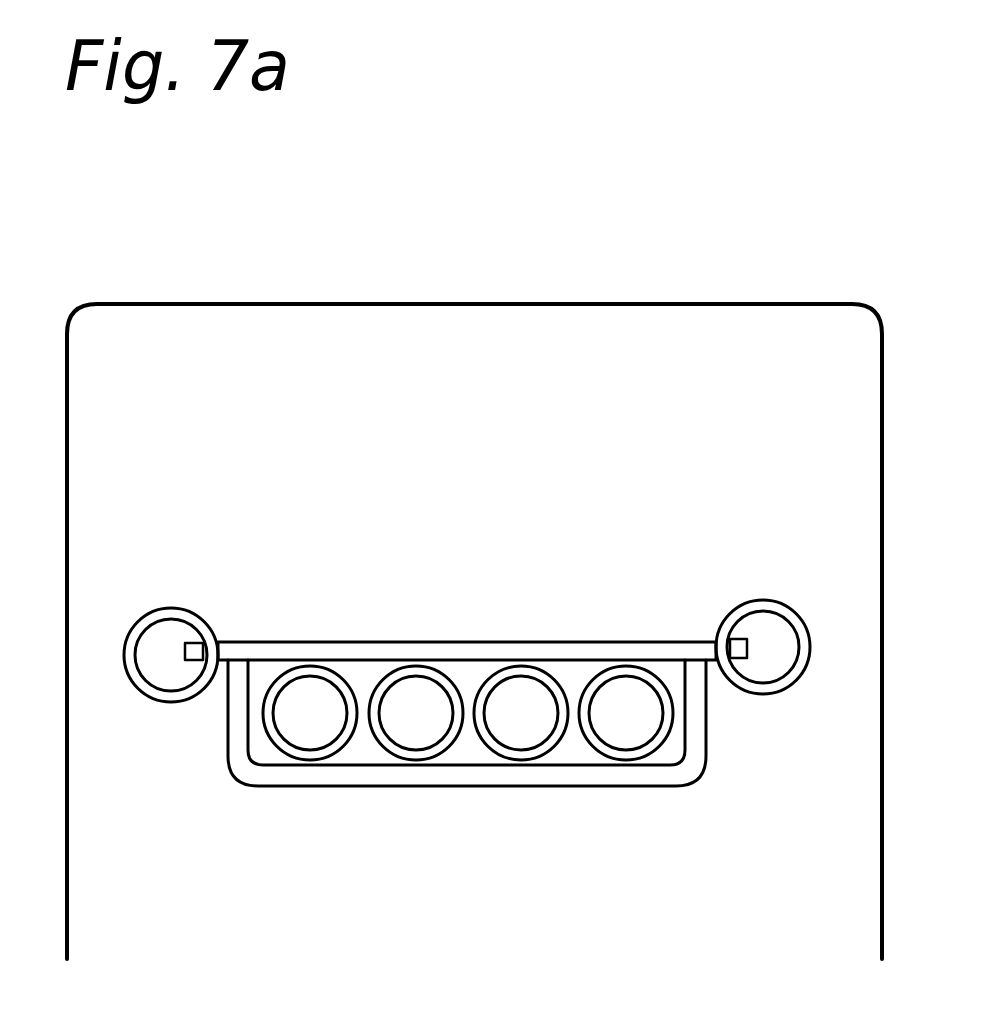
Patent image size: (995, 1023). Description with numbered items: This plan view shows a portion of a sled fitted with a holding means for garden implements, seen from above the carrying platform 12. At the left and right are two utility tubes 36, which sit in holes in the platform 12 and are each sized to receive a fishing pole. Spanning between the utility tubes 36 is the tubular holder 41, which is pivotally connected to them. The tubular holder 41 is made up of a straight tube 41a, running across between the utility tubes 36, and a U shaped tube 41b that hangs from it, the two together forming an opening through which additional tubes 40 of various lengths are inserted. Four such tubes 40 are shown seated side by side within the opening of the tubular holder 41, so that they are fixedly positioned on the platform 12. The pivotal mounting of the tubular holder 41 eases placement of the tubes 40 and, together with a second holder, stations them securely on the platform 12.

The platform 12 is at (216, 398).
The utility tube 36 is at (162, 702).
The tube 40 is at (343, 738).
The tubular holder 41 is at (467, 600).
The tube 41a is at (397, 650).
The U shaped tube 41b is at (695, 690).